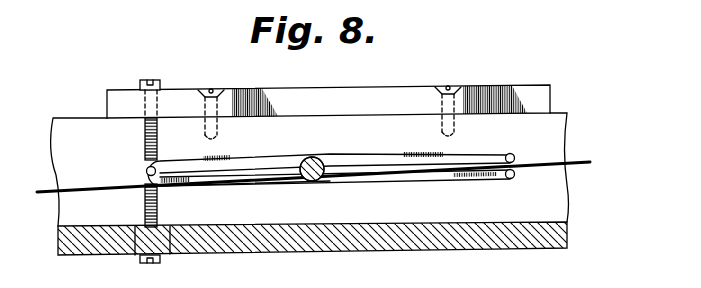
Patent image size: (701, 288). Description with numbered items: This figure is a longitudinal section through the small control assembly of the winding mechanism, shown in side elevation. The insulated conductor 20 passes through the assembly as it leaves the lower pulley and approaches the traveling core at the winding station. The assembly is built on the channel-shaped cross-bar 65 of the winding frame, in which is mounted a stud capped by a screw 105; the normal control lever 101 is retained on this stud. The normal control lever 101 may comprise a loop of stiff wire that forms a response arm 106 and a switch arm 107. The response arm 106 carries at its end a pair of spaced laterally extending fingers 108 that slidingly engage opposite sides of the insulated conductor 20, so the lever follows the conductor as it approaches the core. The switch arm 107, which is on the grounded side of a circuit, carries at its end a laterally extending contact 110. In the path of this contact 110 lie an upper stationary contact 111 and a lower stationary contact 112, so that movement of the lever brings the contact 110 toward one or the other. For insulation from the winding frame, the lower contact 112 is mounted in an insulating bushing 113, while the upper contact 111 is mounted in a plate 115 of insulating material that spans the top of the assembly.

The insulated conductor 20 is at (580, 158).
The channel-shaped cross-bar 65 is at (346, 243).
The normal control lever 101 is at (259, 154).
The screw 105 is at (318, 155).
The response arm 106 is at (420, 181).
The switch arm 107 is at (253, 184).
The fingers 108 is at (510, 152).
The contact 110 is at (144, 169).
The upper stationary contact 111 is at (158, 133).
The lower stationary contact 112 is at (145, 200).
The insulating bushing 113 is at (180, 257).
The plate 115 is at (405, 95).